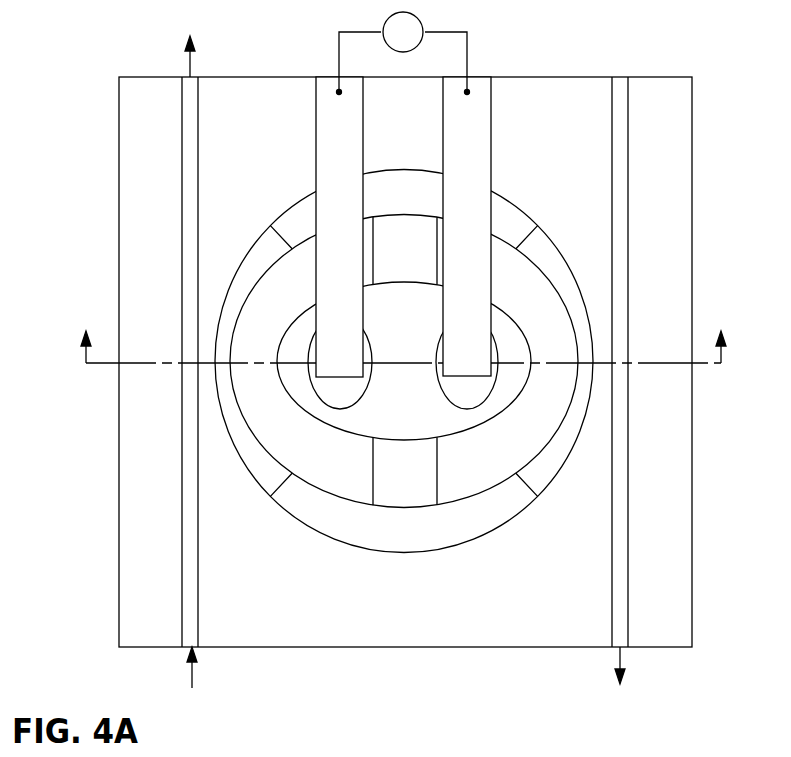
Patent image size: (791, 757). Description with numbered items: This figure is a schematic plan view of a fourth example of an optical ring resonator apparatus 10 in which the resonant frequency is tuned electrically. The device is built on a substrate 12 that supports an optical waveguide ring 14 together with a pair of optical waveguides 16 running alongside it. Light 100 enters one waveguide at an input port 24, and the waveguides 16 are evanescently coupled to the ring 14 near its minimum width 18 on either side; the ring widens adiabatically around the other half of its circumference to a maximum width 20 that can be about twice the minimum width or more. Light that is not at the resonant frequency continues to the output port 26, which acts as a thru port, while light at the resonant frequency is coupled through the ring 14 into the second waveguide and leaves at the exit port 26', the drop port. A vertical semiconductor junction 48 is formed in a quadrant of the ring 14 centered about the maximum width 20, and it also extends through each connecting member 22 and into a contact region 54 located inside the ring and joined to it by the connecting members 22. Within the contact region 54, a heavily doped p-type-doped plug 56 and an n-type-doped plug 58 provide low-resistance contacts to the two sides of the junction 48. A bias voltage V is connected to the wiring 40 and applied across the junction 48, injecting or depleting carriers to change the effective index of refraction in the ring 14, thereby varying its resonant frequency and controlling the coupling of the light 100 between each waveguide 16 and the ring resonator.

The optical ring resonator apparatus 10 is at (400, 367).
The substrate 12 is at (119, 600).
The optical waveguide ring 14 is at (555, 478).
The optical waveguide 16 is at (198, 570).
The minimum width 18 is at (231, 363).
The maximum width 20 is at (408, 553).
The connecting member 22 is at (392, 263).
The input port 24 is at (203, 645).
The output port 26 is at (217, 69).
The exit port 26' is at (649, 651).
The wiring 40 is at (328, 137).
The vertical semiconductor junction 48 is at (392, 200).
The contact region 54 is at (297, 405).
The p-type-doped plug 56 is at (357, 402).
The n-type-doped plug 58 is at (452, 402).
The light 100 is at (192, 675).